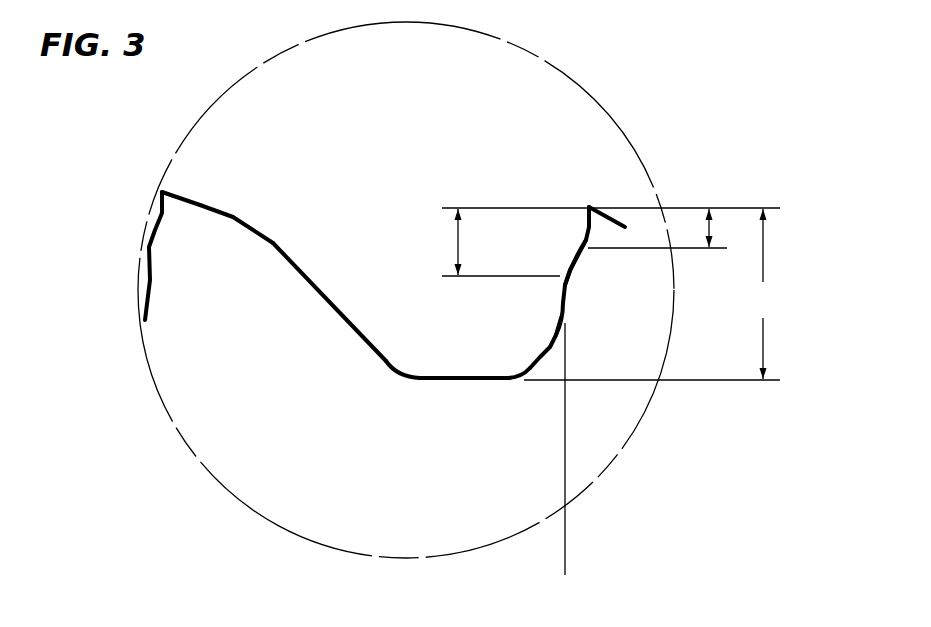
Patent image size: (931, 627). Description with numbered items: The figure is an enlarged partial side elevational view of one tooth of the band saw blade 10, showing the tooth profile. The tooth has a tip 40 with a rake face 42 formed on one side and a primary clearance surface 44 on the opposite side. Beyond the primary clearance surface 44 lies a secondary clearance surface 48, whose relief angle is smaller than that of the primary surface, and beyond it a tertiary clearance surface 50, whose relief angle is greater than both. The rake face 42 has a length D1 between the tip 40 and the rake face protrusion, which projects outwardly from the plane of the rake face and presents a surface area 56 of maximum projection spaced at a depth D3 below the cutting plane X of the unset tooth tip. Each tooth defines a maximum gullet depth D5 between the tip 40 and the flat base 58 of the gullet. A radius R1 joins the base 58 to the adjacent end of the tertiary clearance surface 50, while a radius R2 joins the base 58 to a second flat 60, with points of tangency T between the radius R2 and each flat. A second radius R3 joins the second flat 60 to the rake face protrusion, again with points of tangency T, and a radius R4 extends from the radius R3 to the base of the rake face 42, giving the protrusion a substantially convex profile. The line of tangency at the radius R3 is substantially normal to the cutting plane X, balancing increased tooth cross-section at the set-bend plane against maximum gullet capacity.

The band saw blade 10 is at (372, 128).
The tip 40 is at (160, 186).
The rake face 42 is at (578, 228).
The primary clearance surface 44 is at (178, 198).
The secondary clearance surface 48 is at (228, 217).
The tertiary clearance surface 50 is at (326, 292).
The surface area of maximum projection 56 is at (577, 265).
The base of the gullet 58 is at (460, 377).
The second flat 60 is at (543, 353).
The radius R1 is at (400, 378).
The radius R2 is at (507, 387).
The second radius R3 is at (566, 325).
The radius R4 is at (573, 273).
The length of the rake face D1 is at (709, 208).
The depth D3 is at (499, 206).
The maximum gullet depth D5 is at (654, 294).
The points of tangency T is at (513, 373).
The cutting plane of the tip X is at (522, 207).